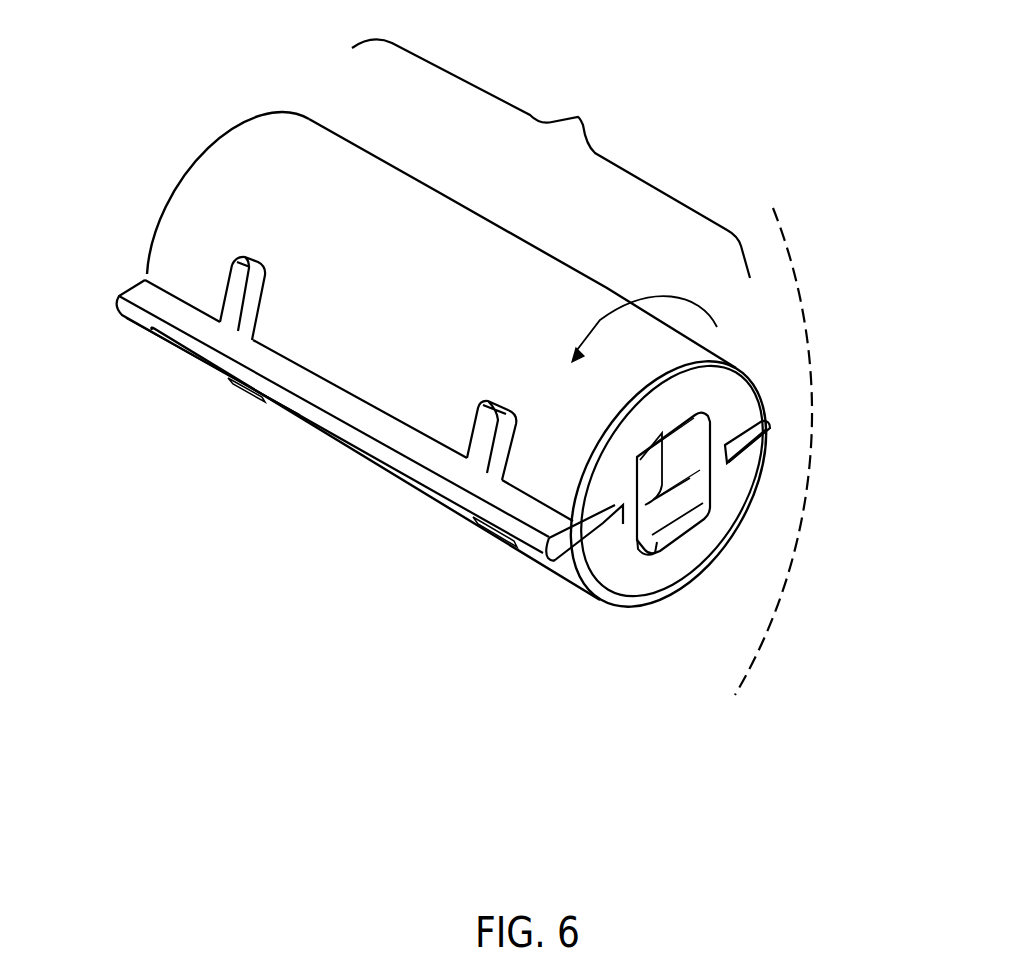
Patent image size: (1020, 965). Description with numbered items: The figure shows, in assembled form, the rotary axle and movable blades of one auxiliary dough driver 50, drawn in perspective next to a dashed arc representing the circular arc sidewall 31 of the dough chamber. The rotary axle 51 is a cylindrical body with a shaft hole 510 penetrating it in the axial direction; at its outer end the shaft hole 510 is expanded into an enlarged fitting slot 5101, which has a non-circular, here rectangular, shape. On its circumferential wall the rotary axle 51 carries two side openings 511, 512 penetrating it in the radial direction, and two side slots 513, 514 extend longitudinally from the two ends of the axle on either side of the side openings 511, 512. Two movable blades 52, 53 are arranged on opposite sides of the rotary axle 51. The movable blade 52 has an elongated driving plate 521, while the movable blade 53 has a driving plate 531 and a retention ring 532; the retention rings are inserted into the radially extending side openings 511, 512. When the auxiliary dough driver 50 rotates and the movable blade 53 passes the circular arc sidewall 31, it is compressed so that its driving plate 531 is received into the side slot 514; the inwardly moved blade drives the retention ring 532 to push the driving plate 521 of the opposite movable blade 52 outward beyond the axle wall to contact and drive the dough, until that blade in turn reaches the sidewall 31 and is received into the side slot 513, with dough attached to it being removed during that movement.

The auxiliary dough driver 50 is at (551, 158).
The rotary axle 51 is at (437, 207).
The movable blade 52 is at (273, 423).
The movable blade 53 is at (766, 399).
The sidewall 31 is at (815, 390).
The shaft hole 510 is at (653, 457).
The fitting slot 5101 is at (677, 507).
The side opening 511 is at (250, 333).
The side opening 512 is at (480, 462).
The side slot 513 is at (657, 550).
The side slot 514 is at (727, 463).
The driving plate 521 is at (362, 442).
The driving plate 531 is at (768, 425).
The retention ring 532 is at (232, 300).